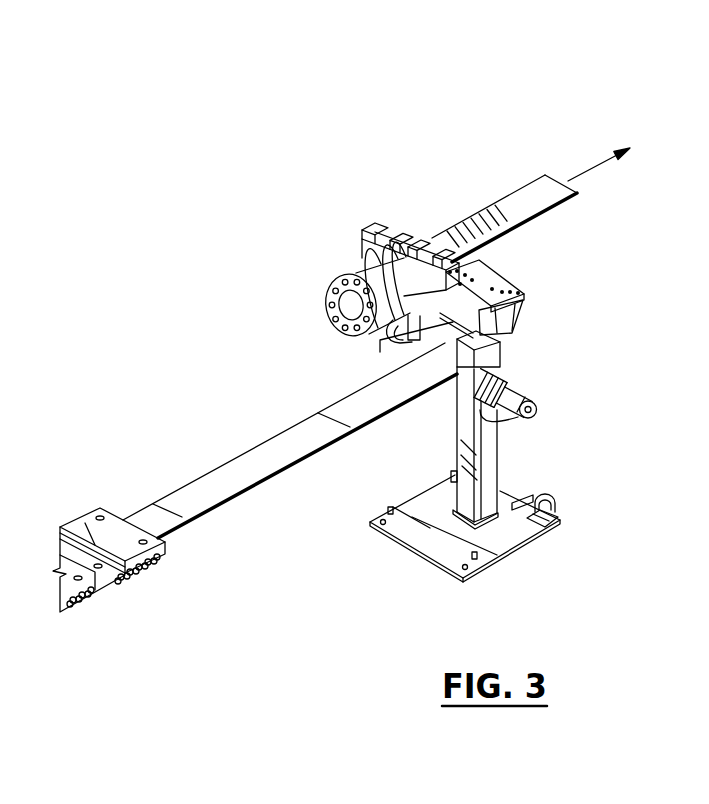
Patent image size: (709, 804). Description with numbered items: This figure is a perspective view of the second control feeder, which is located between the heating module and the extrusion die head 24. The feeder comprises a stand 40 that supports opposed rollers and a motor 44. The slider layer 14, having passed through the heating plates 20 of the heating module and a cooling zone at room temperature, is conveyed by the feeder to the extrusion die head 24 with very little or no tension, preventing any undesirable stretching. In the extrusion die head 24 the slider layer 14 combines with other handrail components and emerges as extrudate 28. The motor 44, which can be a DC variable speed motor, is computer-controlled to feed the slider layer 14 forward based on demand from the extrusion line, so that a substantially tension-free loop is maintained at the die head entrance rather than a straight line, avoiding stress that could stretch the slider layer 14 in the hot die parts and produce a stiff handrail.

The slider layer 14 is at (273, 478).
The heating plate 20 is at (112, 530).
The extrusion die head 24 is at (356, 262).
The extrudate 28 is at (583, 170).
The stand 40 is at (500, 477).
The motor 44 is at (538, 400).